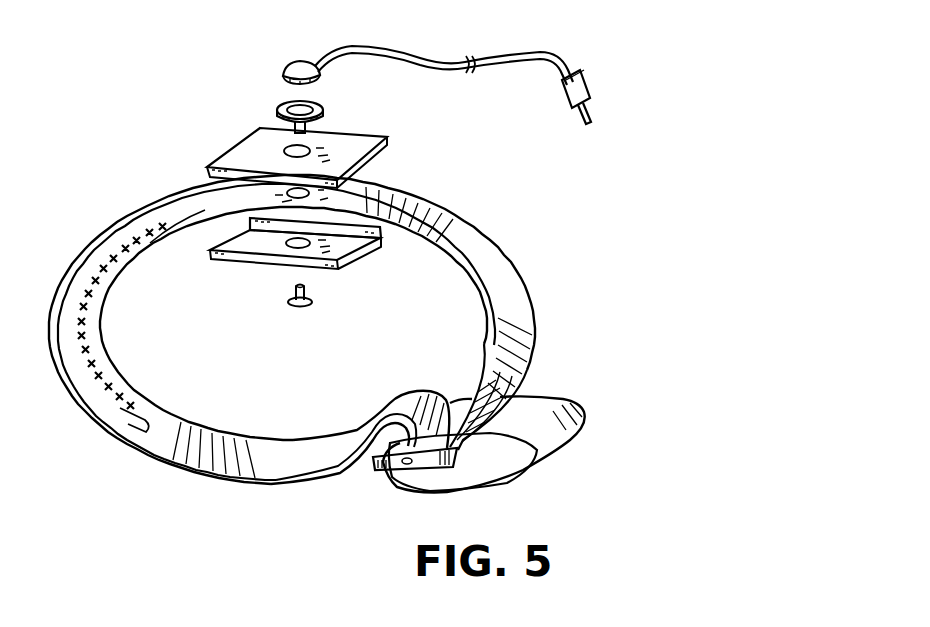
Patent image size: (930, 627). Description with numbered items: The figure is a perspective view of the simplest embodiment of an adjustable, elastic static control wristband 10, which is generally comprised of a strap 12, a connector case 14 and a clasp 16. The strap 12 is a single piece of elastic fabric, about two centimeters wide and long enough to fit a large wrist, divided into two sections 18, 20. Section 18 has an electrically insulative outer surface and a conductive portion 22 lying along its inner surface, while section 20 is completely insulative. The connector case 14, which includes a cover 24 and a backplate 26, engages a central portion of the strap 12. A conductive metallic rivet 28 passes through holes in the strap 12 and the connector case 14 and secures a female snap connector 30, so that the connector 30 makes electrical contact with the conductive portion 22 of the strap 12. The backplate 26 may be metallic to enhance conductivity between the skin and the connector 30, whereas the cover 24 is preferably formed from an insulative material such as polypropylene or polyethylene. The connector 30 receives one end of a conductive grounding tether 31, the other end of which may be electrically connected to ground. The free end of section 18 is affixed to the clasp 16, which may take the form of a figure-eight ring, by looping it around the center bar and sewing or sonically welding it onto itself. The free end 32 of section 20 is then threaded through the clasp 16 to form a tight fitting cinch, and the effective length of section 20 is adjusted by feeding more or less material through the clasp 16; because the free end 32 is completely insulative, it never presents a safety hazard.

The wristband 10 is at (556, 284).
The strap 12 is at (496, 245).
The connector case 14 is at (386, 156).
The clasp 16 is at (386, 485).
The section 18 is at (100, 353).
The section 20 is at (247, 437).
The conductive portion 22 is at (110, 403).
The cover 24 is at (240, 152).
The backplate 26 is at (240, 260).
The rivet 28 is at (313, 303).
The female snap connector 30 is at (323, 113).
The grounding tether 31 is at (413, 53).
The free end 32 is at (297, 497).